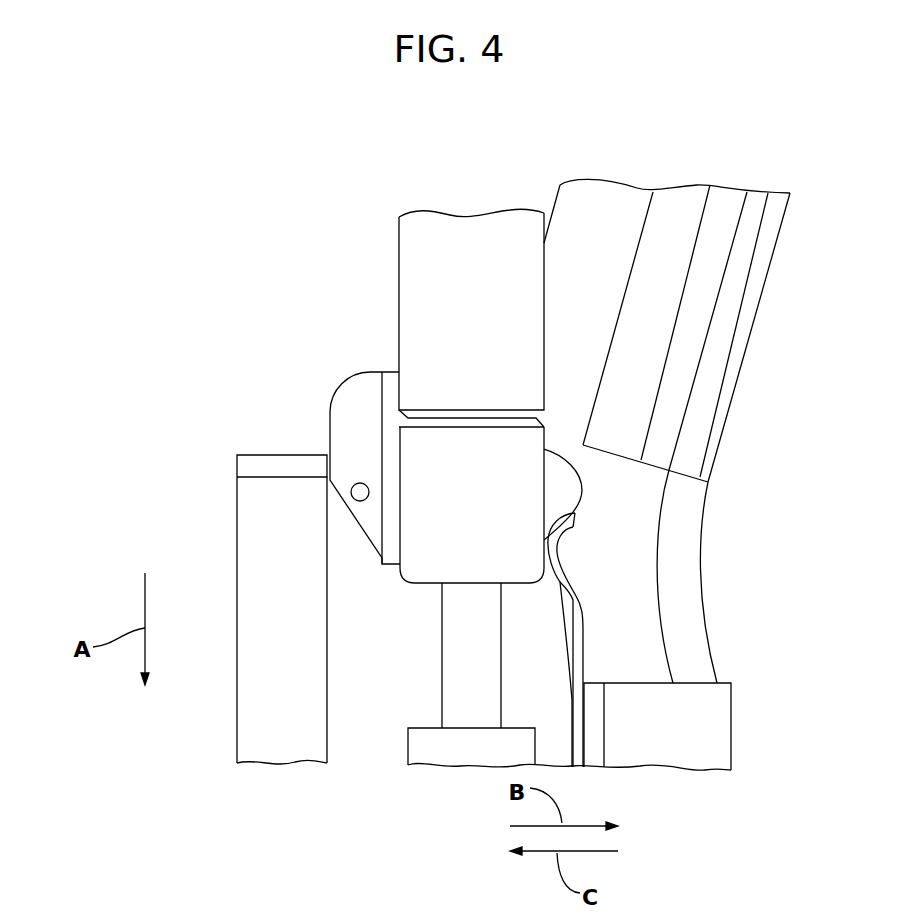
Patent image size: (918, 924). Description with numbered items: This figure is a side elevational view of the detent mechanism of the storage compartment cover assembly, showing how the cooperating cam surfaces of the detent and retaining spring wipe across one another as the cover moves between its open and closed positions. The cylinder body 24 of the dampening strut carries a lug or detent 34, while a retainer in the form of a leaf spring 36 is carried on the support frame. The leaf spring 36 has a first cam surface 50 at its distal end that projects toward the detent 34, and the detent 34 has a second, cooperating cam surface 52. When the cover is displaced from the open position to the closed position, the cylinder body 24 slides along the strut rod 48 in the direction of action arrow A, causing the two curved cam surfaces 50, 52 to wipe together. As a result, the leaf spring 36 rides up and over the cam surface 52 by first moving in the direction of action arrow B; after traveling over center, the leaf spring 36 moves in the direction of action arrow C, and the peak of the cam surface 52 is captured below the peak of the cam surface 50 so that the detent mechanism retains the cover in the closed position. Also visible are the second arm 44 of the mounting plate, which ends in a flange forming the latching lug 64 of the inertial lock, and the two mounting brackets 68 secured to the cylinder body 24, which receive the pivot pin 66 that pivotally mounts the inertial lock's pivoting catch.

The cylinder body 24 is at (433, 262).
The detent 34 is at (565, 488).
The leaf spring 36 is at (580, 620).
The second arm 44 is at (262, 605).
The strut rod 48 is at (453, 672).
The first cam surface 50 is at (545, 552).
The second cam surface 52 is at (583, 493).
The latching lug 64 is at (262, 462).
The pivot pin 66 is at (353, 493).
The mounting brackets 68 is at (345, 408).